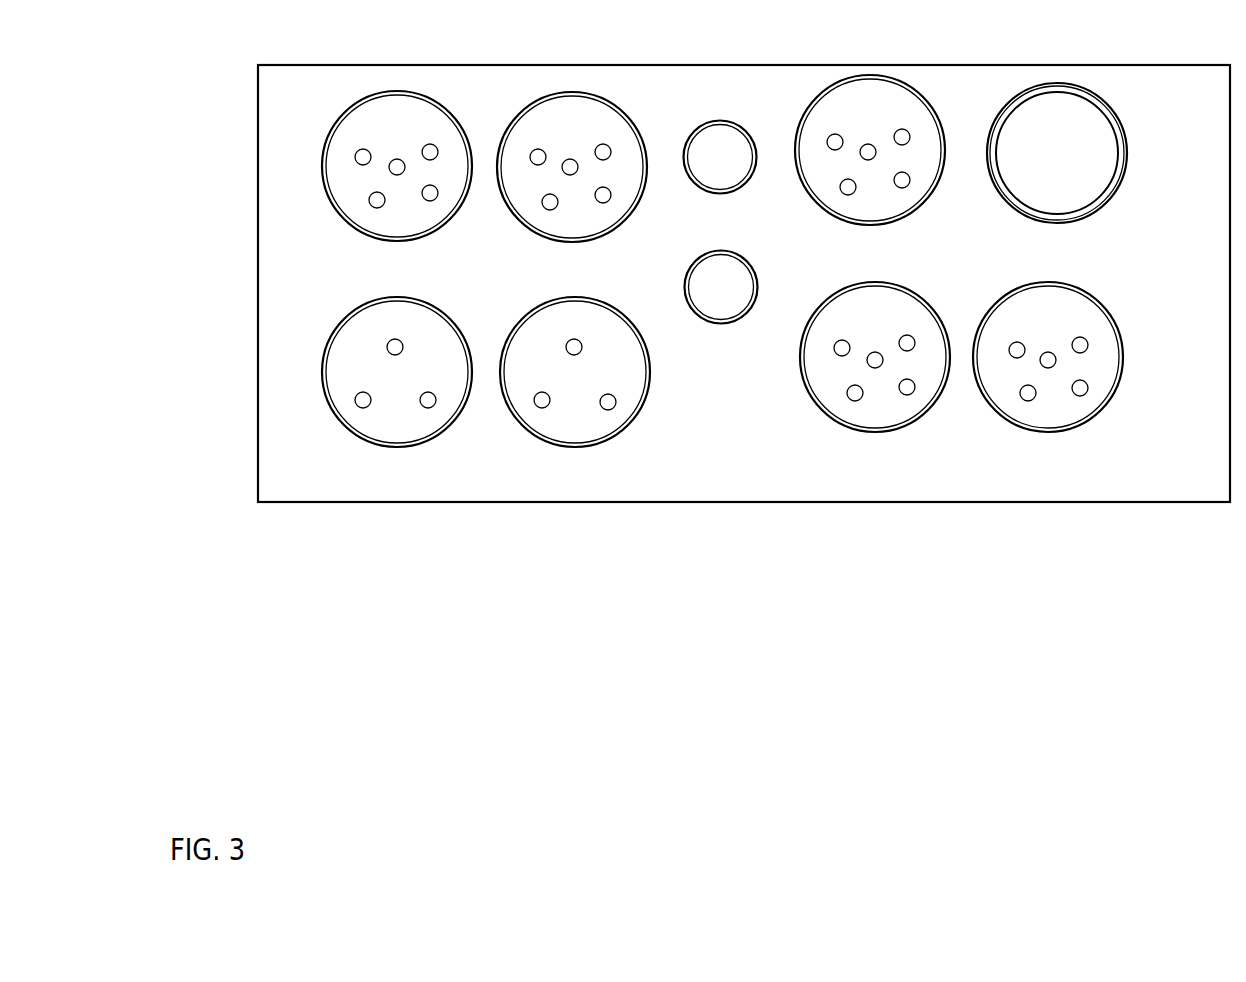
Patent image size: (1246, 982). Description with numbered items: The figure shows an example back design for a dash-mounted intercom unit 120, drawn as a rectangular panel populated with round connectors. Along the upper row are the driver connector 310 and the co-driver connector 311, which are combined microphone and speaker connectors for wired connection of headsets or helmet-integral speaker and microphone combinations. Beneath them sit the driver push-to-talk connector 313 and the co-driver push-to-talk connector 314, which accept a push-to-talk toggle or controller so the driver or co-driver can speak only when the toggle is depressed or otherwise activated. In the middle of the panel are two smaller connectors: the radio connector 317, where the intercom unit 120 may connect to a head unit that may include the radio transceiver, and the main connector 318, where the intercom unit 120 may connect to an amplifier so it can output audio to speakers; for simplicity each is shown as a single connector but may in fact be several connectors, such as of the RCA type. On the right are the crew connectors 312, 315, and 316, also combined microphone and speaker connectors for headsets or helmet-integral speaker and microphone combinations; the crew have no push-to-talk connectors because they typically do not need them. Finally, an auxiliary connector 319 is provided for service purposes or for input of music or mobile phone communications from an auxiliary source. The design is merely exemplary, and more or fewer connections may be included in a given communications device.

The intercom unit 120 is at (744, 283).
The driver connector 310 is at (388, 102).
The co-driver connector 311 is at (562, 103).
The crew connector 312 is at (860, 102).
The driver push-to-talk connector 313 is at (383, 310).
The co-driver push-to-talk connector 314 is at (548, 310).
The crew connector 315 is at (865, 294).
The crew connector 316 is at (1040, 294).
The radio connector 317 is at (700, 122).
The main connector 318 is at (710, 252).
The auxiliary connector 319 is at (1037, 104).